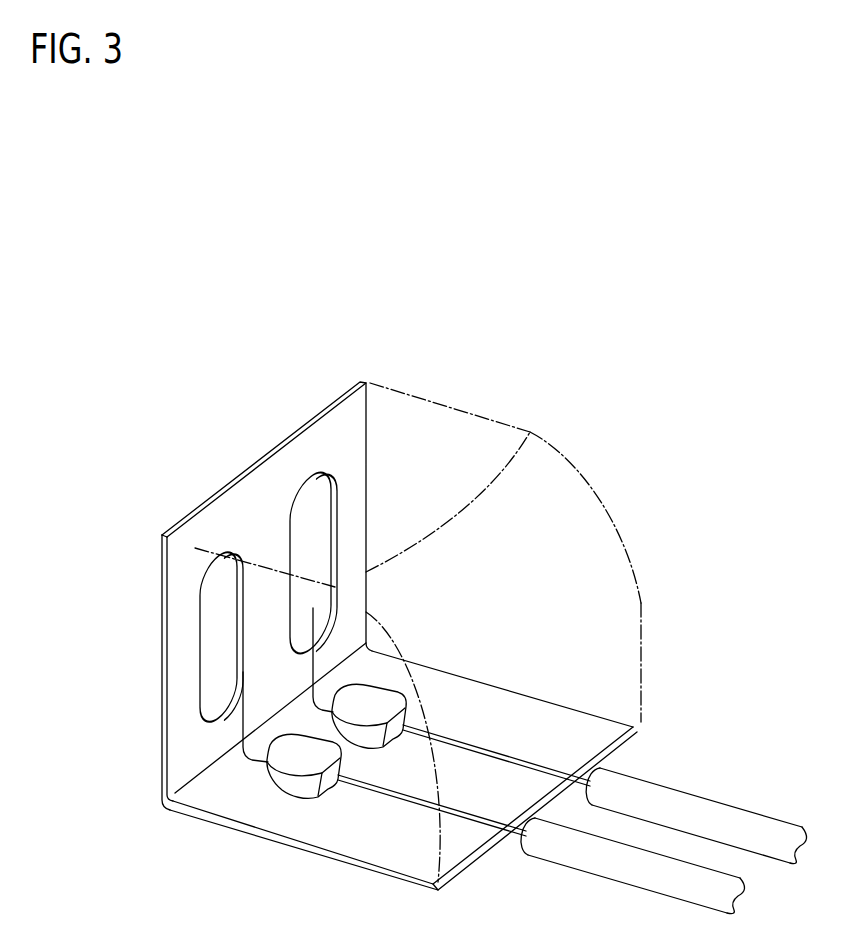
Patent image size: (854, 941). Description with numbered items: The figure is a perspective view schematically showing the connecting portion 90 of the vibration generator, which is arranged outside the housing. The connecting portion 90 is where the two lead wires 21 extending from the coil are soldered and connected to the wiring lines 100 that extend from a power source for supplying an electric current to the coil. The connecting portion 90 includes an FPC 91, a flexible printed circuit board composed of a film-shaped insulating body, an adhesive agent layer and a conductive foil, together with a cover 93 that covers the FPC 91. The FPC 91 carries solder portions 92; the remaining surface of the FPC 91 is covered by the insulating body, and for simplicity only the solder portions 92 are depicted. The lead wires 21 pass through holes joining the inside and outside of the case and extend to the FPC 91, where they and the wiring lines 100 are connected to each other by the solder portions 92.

The connecting portion 90 is at (457, 327).
The FPC (flexible printed circuit) 91 is at (327, 853).
The solder portions 92 is at (292, 782).
The cover 93 is at (587, 475).
The lead wires 21 is at (310, 670).
The wiring lines 100 is at (637, 867).